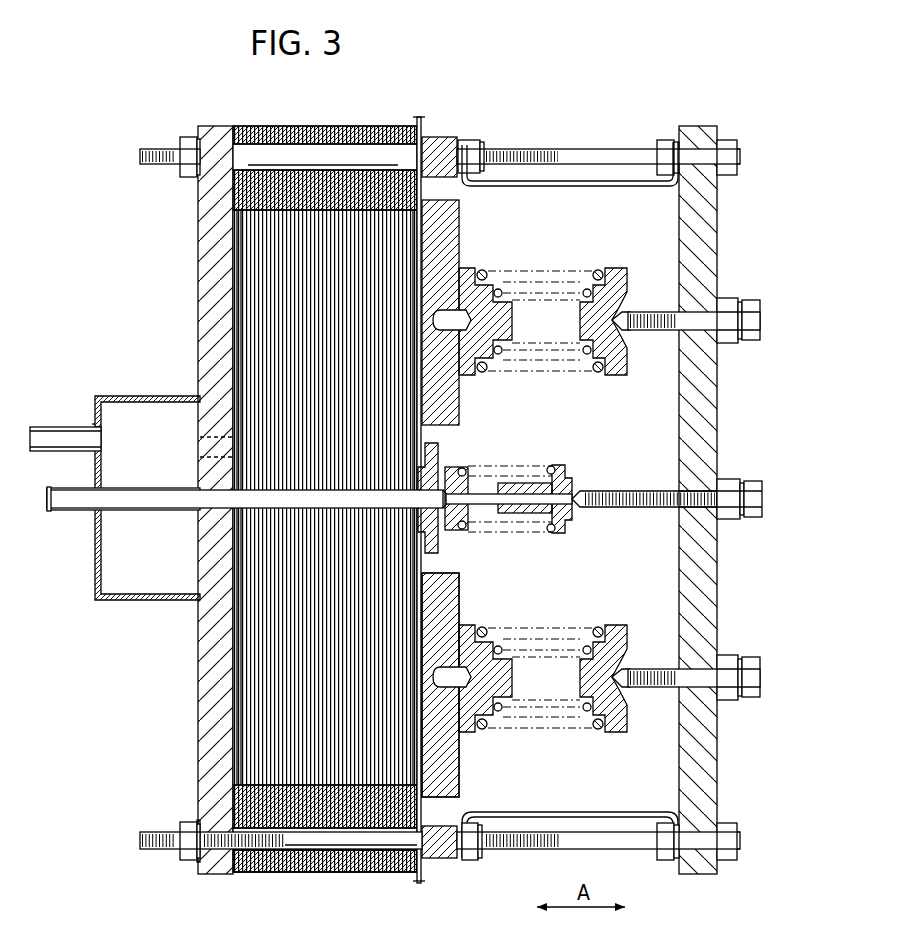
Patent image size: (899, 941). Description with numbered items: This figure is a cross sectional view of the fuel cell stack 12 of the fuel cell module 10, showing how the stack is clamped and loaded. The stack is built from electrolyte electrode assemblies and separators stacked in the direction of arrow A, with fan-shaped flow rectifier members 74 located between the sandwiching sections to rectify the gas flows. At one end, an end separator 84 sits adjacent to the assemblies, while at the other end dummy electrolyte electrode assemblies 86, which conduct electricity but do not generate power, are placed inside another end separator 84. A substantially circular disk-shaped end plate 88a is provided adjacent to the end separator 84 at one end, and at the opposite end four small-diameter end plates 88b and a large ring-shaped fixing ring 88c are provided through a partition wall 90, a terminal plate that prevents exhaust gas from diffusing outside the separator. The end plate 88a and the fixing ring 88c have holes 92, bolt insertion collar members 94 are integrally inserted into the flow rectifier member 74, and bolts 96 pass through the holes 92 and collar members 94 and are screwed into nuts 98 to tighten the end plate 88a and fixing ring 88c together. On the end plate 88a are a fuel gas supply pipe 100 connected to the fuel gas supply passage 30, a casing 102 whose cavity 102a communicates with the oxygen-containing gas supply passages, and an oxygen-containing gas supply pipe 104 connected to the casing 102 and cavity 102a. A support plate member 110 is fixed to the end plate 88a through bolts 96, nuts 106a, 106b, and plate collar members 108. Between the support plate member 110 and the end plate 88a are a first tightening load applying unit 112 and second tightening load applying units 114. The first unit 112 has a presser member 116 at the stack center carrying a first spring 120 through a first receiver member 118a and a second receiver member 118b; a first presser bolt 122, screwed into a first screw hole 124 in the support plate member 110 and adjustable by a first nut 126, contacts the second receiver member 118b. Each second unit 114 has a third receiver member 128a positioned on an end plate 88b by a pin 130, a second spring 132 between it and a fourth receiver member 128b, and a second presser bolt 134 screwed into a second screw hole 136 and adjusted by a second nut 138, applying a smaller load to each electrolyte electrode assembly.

The fuel cell module 10 is at (536, 61).
The fuel cell stack 12 is at (348, 123).
The fuel gas supply passage 30 is at (264, 502).
The flow rectifier member 74 is at (307, 126).
The end separator 84 is at (237, 712).
The dummy electrolyte electrode assemblies 86 is at (240, 687).
The end plate 88a is at (212, 124).
The end plates 88b is at (450, 213).
The fixing ring 88c is at (437, 141).
The partition wall (terminal plate) 90 is at (432, 800).
The holes 92 is at (202, 841).
The bolt insertion collar members 94 is at (252, 873).
The bolts 96 is at (321, 839).
The nuts 98 is at (180, 824).
The fuel gas supply pipe 100 is at (139, 487).
The casing 102 is at (140, 601).
The cavity 102a is at (123, 427).
The oxygen-containing gas supply pipe 104 is at (65, 427).
The nut 106a is at (665, 855).
The nut 106b is at (475, 855).
The plate collar members 108 is at (565, 810).
The support plate member 110 is at (707, 410).
The first tightening load applying unit 112 is at (573, 466).
The second tightening load applying units 114 is at (606, 384).
The presser member 116 is at (439, 448).
The first receiver member 118a is at (460, 534).
The second receiver member 118b is at (562, 531).
The first spring 120 is at (548, 528).
The first presser bolt 122 is at (607, 492).
The first screw hole 124 is at (688, 498).
The first nut 126 is at (728, 492).
The third receiver member 128a is at (468, 273).
The fourth receiver member 128b is at (617, 270).
The pin 130 is at (458, 321).
The second spring 132 is at (600, 272).
The second presser bolt 134 is at (638, 330).
The second screw hole 136 is at (670, 312).
The second nut 138 is at (728, 313).